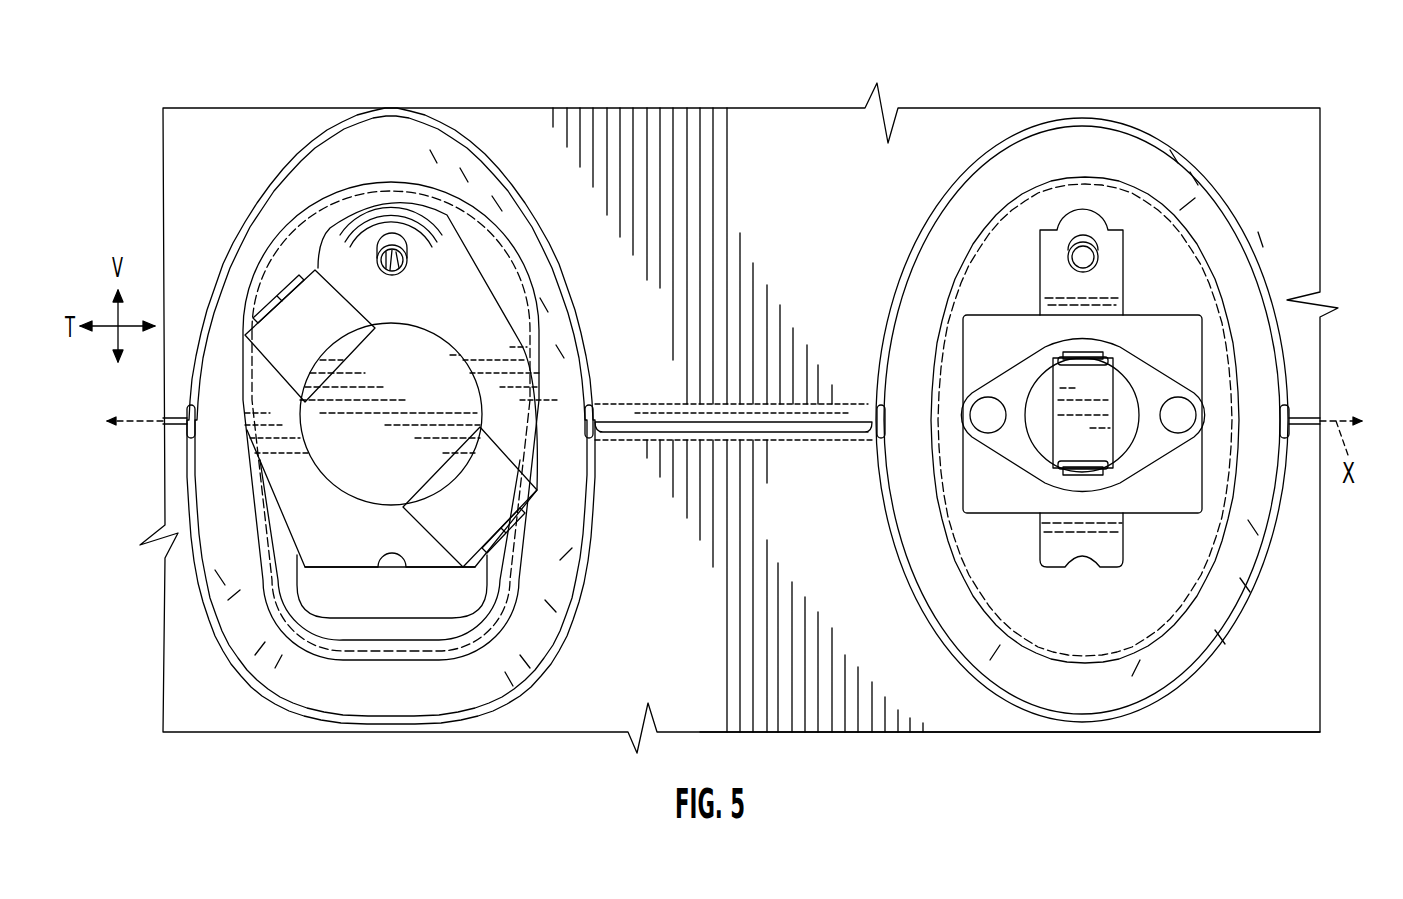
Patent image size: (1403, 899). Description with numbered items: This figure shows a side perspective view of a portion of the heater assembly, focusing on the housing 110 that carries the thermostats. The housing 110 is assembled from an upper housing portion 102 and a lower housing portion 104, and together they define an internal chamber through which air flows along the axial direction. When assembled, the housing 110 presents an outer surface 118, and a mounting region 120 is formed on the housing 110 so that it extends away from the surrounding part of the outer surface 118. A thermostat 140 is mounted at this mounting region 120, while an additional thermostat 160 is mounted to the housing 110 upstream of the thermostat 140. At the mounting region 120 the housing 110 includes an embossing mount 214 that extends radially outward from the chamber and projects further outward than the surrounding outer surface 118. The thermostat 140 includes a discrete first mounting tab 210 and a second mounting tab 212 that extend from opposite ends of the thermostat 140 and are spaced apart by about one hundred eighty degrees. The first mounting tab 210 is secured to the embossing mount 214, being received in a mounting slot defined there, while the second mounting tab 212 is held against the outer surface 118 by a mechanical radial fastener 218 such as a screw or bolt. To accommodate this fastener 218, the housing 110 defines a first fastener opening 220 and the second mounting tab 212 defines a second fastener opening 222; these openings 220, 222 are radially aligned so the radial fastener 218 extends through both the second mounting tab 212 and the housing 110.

The upper housing portion 102 is at (957, 137).
The lower housing portion 104 is at (952, 722).
The housing 110 is at (848, 137).
The outer surface 118 is at (787, 161).
The mounting region 120 is at (250, 260).
The thermostat 140 is at (350, 468).
The additional thermostat 160 is at (1127, 393).
The first mounting tab 210 is at (327, 552).
The second mounting tab 212 is at (455, 282).
The embossing mount 214 is at (483, 607).
The mechanical radial fastener 218 is at (405, 254).
The first fastener opening 220 is at (403, 233).
The second fastener opening 222 is at (370, 266).